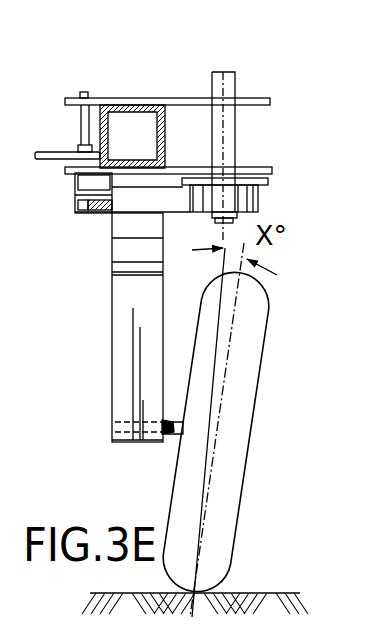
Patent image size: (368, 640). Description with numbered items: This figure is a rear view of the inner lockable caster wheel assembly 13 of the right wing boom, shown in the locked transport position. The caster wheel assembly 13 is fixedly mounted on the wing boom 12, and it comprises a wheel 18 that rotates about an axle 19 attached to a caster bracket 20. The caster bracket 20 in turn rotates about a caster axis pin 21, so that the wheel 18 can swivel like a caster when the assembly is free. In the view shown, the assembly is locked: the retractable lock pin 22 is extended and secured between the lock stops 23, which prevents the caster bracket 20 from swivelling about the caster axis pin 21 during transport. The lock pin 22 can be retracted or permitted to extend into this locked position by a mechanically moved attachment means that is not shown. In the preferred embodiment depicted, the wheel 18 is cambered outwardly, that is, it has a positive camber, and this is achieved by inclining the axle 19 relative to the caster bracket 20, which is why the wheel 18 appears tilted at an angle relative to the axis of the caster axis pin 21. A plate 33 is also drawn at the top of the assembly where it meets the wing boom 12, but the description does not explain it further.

The wing boom 12 is at (132, 104).
The caster wheel assembly 13 is at (303, 227).
The wheel 18 is at (253, 376).
The axle 19 is at (172, 436).
The caster bracket 20 is at (120, 318).
The caster axis pin 21 is at (238, 90).
The lock pin 22 is at (92, 97).
The lock stops 23 is at (90, 214).
The mounting plate 33 is at (192, 100).